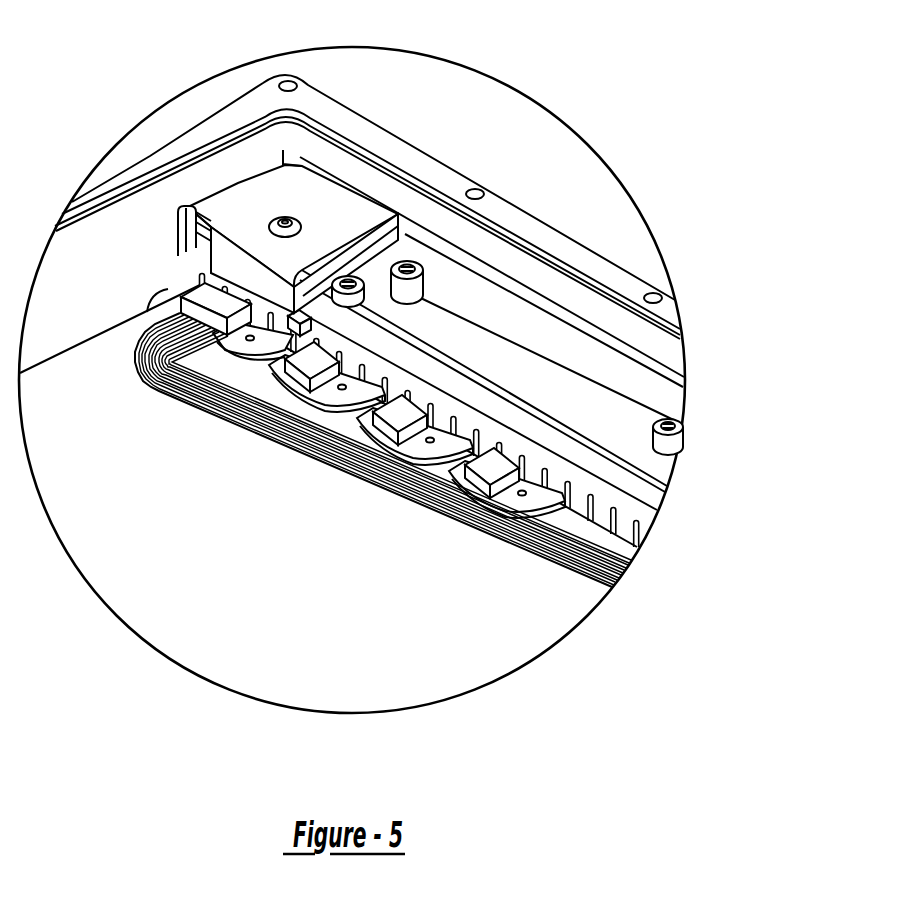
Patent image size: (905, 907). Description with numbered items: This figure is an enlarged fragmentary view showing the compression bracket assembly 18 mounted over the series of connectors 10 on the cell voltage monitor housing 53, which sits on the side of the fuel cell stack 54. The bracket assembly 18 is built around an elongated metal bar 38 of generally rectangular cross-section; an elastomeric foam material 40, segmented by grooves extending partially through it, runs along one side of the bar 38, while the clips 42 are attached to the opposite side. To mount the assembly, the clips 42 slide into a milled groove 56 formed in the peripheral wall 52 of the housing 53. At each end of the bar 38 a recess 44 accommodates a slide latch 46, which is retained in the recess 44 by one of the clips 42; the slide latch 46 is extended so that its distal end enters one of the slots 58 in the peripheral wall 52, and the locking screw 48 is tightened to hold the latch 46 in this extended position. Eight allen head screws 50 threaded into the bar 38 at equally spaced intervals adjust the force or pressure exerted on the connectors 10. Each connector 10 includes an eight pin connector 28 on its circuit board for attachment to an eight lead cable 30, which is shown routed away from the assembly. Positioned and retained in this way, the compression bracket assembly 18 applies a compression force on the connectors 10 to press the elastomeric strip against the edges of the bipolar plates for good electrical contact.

The connector 10 is at (236, 358).
The compression bracket assembly 18 is at (617, 393).
The eight pin connector 28 is at (203, 295).
The eight lead cable 30 is at (417, 500).
The elongated metal bar 38 is at (650, 462).
The elastomeric foam material 40 is at (627, 512).
The clips 42 is at (360, 207).
The recess 44 is at (297, 372).
The slide latch 46 is at (180, 233).
The locking screw 48 is at (357, 267).
The allen head screws 50 is at (423, 267).
The peripheral wall 52 is at (333, 165).
The cell voltage monitor housing 53 is at (325, 89).
The fuel cell stack 54 is at (311, 581).
The milled groove 56 is at (563, 313).
The slots 58 is at (195, 250).